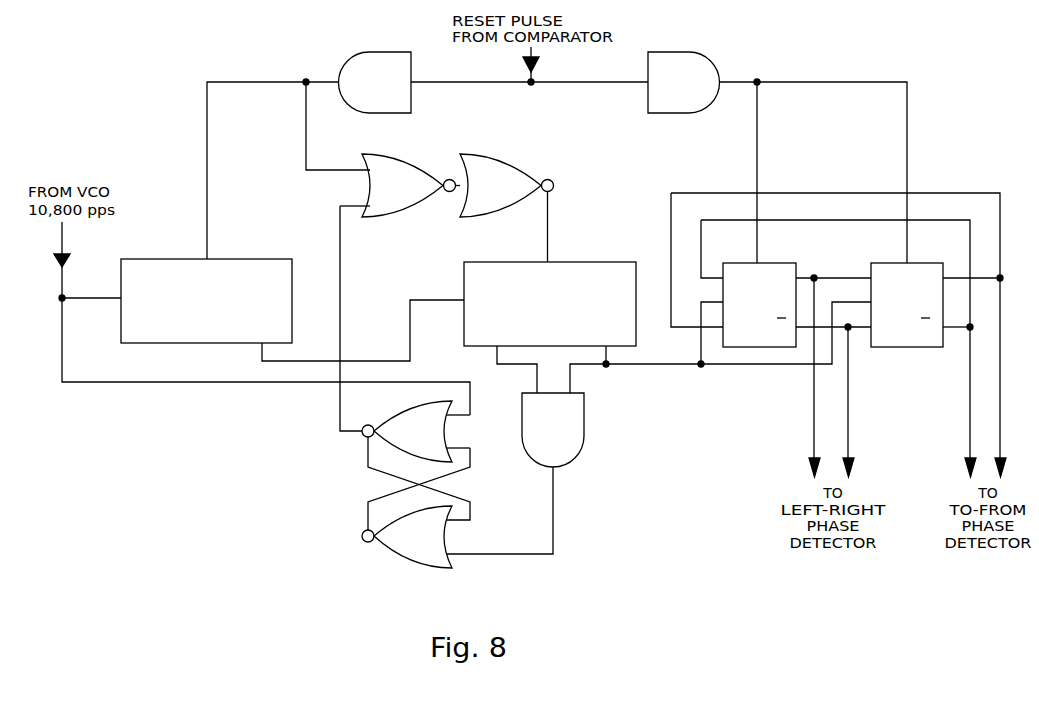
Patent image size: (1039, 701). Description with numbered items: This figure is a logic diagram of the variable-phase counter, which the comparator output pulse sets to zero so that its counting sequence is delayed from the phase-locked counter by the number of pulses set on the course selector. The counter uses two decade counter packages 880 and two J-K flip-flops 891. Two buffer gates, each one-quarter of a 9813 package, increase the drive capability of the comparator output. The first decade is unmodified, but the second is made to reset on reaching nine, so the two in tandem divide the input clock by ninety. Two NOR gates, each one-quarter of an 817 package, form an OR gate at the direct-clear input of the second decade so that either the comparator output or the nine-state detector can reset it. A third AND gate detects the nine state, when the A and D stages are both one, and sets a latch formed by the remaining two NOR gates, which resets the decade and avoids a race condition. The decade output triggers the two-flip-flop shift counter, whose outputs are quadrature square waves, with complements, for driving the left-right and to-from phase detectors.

The decade counter 880 is at (378, 294).
The flip-flop (1/2 891) 891 is at (833, 297).
The AND gate (1/4 9813) 9813 is at (528, 259).
The NOR gate (1/4 817) 817 is at (424, 361).